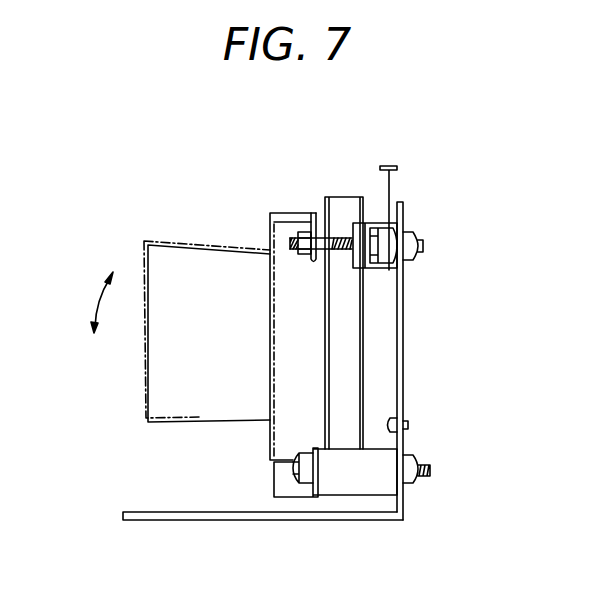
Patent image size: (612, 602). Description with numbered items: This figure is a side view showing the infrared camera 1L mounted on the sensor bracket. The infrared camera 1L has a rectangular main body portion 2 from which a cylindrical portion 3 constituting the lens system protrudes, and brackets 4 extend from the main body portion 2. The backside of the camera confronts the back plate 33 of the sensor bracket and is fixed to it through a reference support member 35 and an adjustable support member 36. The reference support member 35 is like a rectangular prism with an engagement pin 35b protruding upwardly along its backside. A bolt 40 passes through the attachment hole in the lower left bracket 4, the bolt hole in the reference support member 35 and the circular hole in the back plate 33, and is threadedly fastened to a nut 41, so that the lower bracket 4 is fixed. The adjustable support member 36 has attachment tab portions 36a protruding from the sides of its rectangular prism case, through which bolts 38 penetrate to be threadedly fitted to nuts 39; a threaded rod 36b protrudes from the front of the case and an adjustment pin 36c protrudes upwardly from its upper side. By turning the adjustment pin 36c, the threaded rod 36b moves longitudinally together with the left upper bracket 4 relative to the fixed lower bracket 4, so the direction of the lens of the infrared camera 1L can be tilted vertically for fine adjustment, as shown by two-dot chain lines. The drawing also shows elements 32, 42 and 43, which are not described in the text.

The infrared camera 1L is at (250, 174).
The main body portion 2 is at (312, 213).
The cylindrical portion 3 is at (217, 262).
The bracket 4 is at (300, 229).
The base plate 32 is at (165, 522).
The back plate 33 is at (403, 346).
The reference support member 35 is at (350, 482).
The engagement pin 35b is at (390, 428).
The adjustable support member 36 is at (372, 222).
The attachment tab portion 36a is at (392, 275).
The threaded rod 36b is at (340, 197).
The adjustment pin 36c is at (392, 188).
The bolt 38 is at (372, 226).
The nut 39 is at (418, 255).
The bolt 40 is at (275, 476).
The nut 41 is at (421, 482).
The nut 42 is at (305, 254).
The collar 43 is at (314, 262).